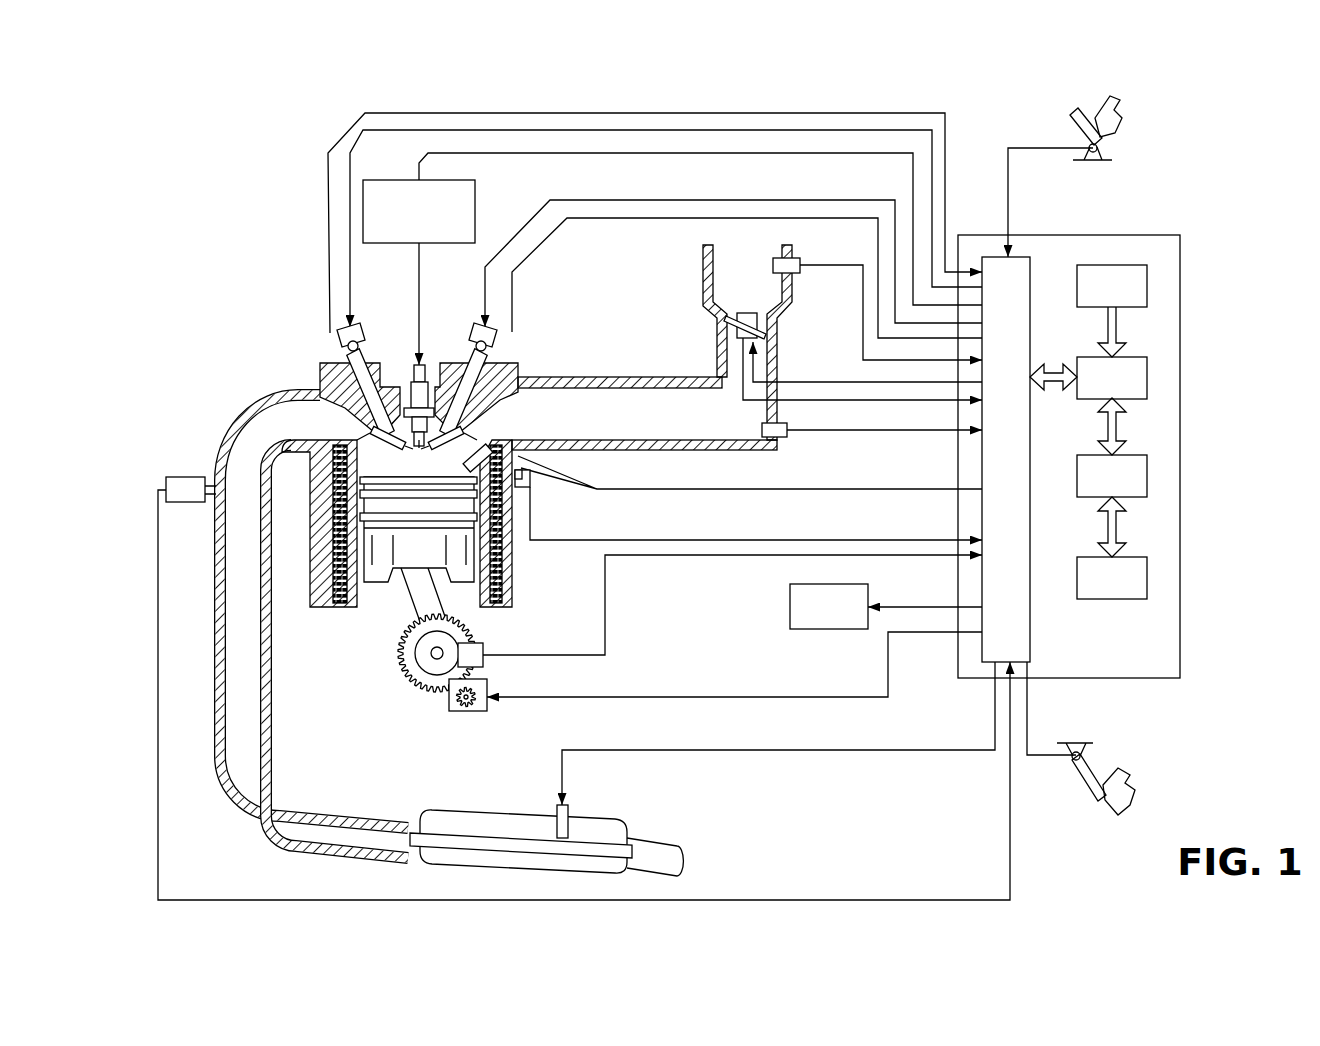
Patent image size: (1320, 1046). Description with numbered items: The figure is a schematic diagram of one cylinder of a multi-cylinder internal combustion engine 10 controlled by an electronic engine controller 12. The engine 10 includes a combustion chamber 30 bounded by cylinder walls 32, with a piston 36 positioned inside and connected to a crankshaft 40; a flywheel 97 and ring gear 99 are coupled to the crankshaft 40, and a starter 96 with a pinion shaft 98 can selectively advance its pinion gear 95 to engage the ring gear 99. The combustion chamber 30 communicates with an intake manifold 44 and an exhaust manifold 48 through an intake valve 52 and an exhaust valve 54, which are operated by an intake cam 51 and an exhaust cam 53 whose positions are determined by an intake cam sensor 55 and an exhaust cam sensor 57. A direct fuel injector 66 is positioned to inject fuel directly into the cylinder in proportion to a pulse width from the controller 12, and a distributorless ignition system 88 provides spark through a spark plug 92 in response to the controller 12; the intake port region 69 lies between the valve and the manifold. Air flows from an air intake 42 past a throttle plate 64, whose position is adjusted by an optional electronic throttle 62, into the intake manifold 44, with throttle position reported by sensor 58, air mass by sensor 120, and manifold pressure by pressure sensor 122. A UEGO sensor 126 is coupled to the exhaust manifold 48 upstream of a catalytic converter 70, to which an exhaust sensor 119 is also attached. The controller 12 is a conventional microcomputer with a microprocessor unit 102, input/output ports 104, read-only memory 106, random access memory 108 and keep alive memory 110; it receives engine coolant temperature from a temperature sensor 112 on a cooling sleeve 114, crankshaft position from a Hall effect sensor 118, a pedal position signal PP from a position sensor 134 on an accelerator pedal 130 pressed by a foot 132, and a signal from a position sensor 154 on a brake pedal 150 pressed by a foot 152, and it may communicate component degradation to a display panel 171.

The internal combustion engine 10 is at (256, 316).
The electronic engine controller 12 is at (1172, 236).
The combustion chamber 30 is at (345, 547).
The cylinder walls 32 is at (363, 603).
The piston 36 is at (402, 560).
The crankshaft 40 is at (414, 662).
The air intake 42 is at (733, 293).
The intake manifold 44 is at (671, 427).
The exhaust manifold 48 is at (278, 431).
The intake cam 51 is at (490, 330).
The intake valve 52 is at (480, 422).
The exhaust cam 53 is at (357, 330).
The exhaust valve 54 is at (330, 405).
The intake cam sensor 55 is at (491, 355).
The exhaust cam sensor 57 is at (343, 358).
The throttle position sensor 58 is at (740, 344).
The electronic throttle 62 is at (762, 325).
The throttle plate 64 is at (722, 317).
The direct fuel injector 66 is at (534, 470).
The intake port 69 is at (500, 431).
The catalytic converter 70 is at (430, 811).
The distributorless ignition system 88 is at (376, 180).
The spark plug 92 is at (421, 367).
The pinion gear 95 is at (471, 712).
The starter 96 is at (697, 695).
The flywheel 97 is at (410, 655).
The pinion shaft 98 is at (457, 710).
The ring gear 99 is at (440, 688).
The microprocessor unit 102 is at (1147, 375).
The input/output ports 104 is at (1030, 268).
The read-only memory 106 is at (1147, 287).
The random access memory 108 is at (1147, 473).
The keep alive memory 110 is at (1147, 575).
The temperature sensor 112 is at (532, 488).
The cooling sleeve 114 is at (495, 556).
The Hall effect sensor 118 is at (484, 646).
The exhaust temperature sensor 119 is at (570, 805).
The air mass sensor 120 is at (800, 270).
The pressure sensor 122 is at (787, 436).
The Universal Exhaust Gas Oxygen sensor 126 is at (170, 478).
The accelerator pedal 130 is at (1126, 127).
The foot 132 is at (1118, 105).
The position sensor 134 is at (1105, 150).
The brake pedal 150 is at (1082, 746).
The foot 152 is at (1120, 775).
The position sensor 154 is at (1062, 750).
The display panel 171 is at (886, 606).
The pedal position signal PP is at (1009, 215).